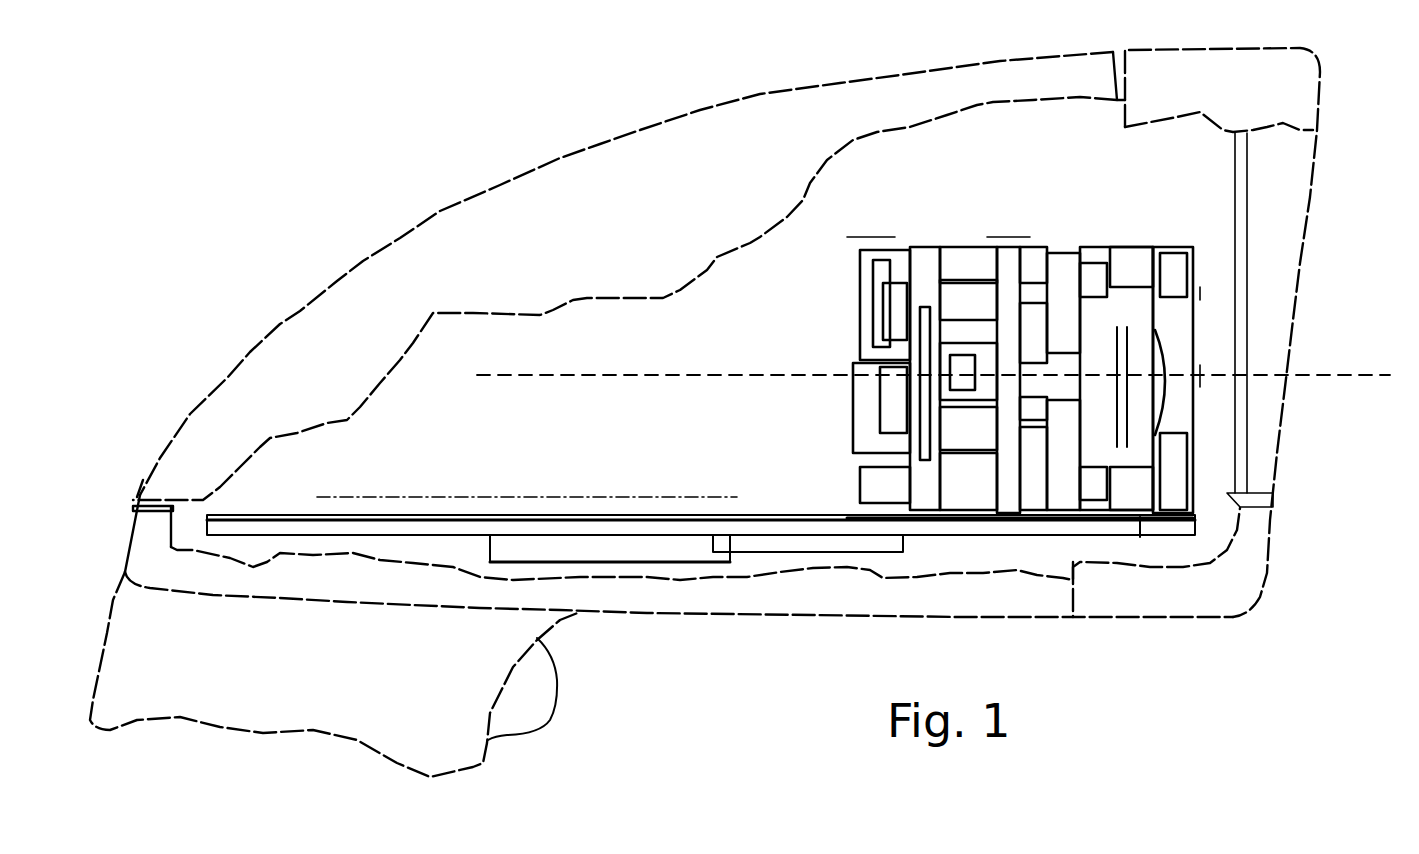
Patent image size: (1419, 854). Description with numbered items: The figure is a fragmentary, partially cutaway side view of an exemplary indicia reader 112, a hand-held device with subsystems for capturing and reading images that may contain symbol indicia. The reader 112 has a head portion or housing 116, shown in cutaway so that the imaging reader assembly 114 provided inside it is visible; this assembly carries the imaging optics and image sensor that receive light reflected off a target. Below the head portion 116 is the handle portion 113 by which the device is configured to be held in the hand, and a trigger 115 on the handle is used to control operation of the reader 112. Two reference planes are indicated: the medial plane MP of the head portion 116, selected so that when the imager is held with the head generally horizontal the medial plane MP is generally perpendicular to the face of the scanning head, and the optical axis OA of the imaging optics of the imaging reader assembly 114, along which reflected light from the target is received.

The indicia reader 112 is at (535, 111).
The handle portion 113 is at (302, 686).
The imaging reader assembly 114 is at (920, 195).
The trigger 115 is at (558, 697).
The head portion 116 is at (358, 262).
The medial plane MP is at (492, 493).
The optical axis OA is at (1317, 375).